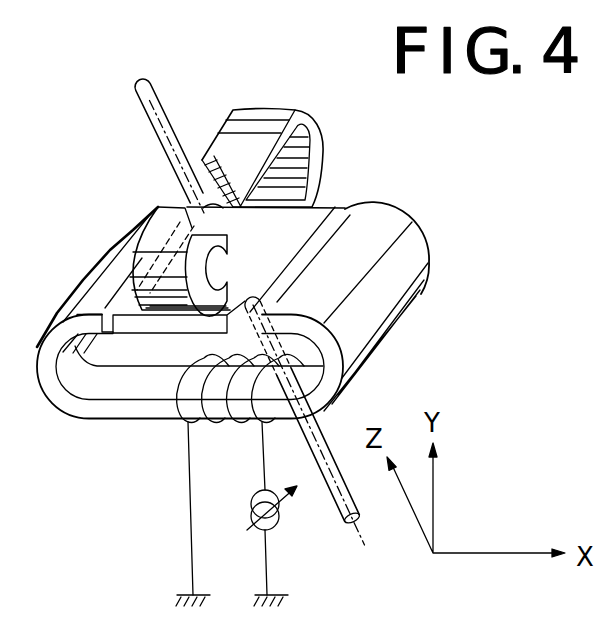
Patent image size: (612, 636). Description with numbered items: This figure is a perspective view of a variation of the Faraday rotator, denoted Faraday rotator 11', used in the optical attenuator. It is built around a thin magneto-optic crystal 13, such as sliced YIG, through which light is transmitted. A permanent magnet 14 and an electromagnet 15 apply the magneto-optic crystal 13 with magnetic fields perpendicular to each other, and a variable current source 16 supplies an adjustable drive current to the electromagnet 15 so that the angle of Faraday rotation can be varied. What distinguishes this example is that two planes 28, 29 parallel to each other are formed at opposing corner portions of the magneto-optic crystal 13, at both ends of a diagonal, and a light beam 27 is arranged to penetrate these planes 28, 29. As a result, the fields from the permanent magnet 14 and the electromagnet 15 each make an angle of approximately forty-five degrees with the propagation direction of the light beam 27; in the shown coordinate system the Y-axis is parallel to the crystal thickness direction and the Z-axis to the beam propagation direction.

The Faraday rotator 11' is at (282, 319).
The magneto-optic crystal 13 is at (310, 210).
The permanent magnet 14 is at (250, 118).
The electromagnet 15 is at (418, 283).
The variable current source 16 is at (278, 532).
The light beam 27 is at (363, 548).
The plane 28 is at (268, 307).
The plane 29 is at (218, 208).